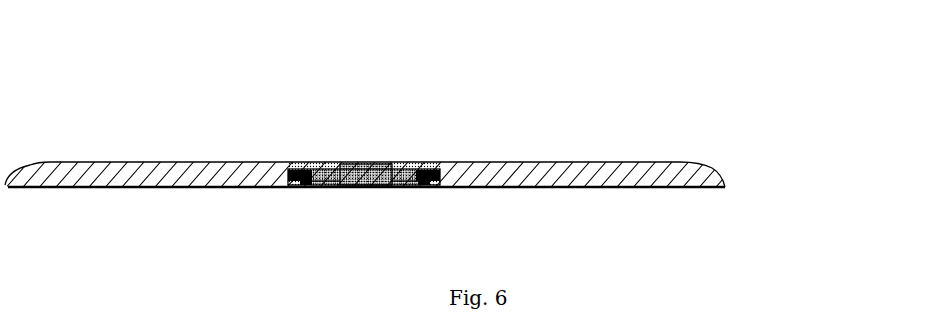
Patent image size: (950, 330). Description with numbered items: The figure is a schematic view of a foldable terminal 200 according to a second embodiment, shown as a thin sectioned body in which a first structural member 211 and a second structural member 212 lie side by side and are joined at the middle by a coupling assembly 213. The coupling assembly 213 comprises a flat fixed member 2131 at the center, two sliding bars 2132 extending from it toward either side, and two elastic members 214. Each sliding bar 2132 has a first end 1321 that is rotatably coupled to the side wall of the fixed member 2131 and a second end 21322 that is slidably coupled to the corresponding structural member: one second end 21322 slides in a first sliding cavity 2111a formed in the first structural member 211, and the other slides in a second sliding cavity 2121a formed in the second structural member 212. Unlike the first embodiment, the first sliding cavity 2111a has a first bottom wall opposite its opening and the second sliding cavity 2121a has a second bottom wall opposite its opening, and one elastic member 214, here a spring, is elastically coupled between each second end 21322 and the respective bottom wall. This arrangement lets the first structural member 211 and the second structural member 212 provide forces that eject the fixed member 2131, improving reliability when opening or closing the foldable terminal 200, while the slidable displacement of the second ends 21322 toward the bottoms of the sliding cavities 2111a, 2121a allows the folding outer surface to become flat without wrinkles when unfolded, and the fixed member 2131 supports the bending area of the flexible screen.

The foldable terminal 200 is at (722, 108).
The first structural member 211 is at (548, 167).
The second structural member 212 is at (152, 170).
The coupling assembly 213 is at (408, 57).
The fixed member 2131 is at (366, 163).
The sliding bar 2132 is at (352, 118).
The second end 21322 is at (310, 163).
The first end 1321 is at (348, 163).
The elastic member 214 is at (293, 187).
The second sliding cavity 2121a is at (322, 188).
The first sliding cavity 2111a is at (408, 188).